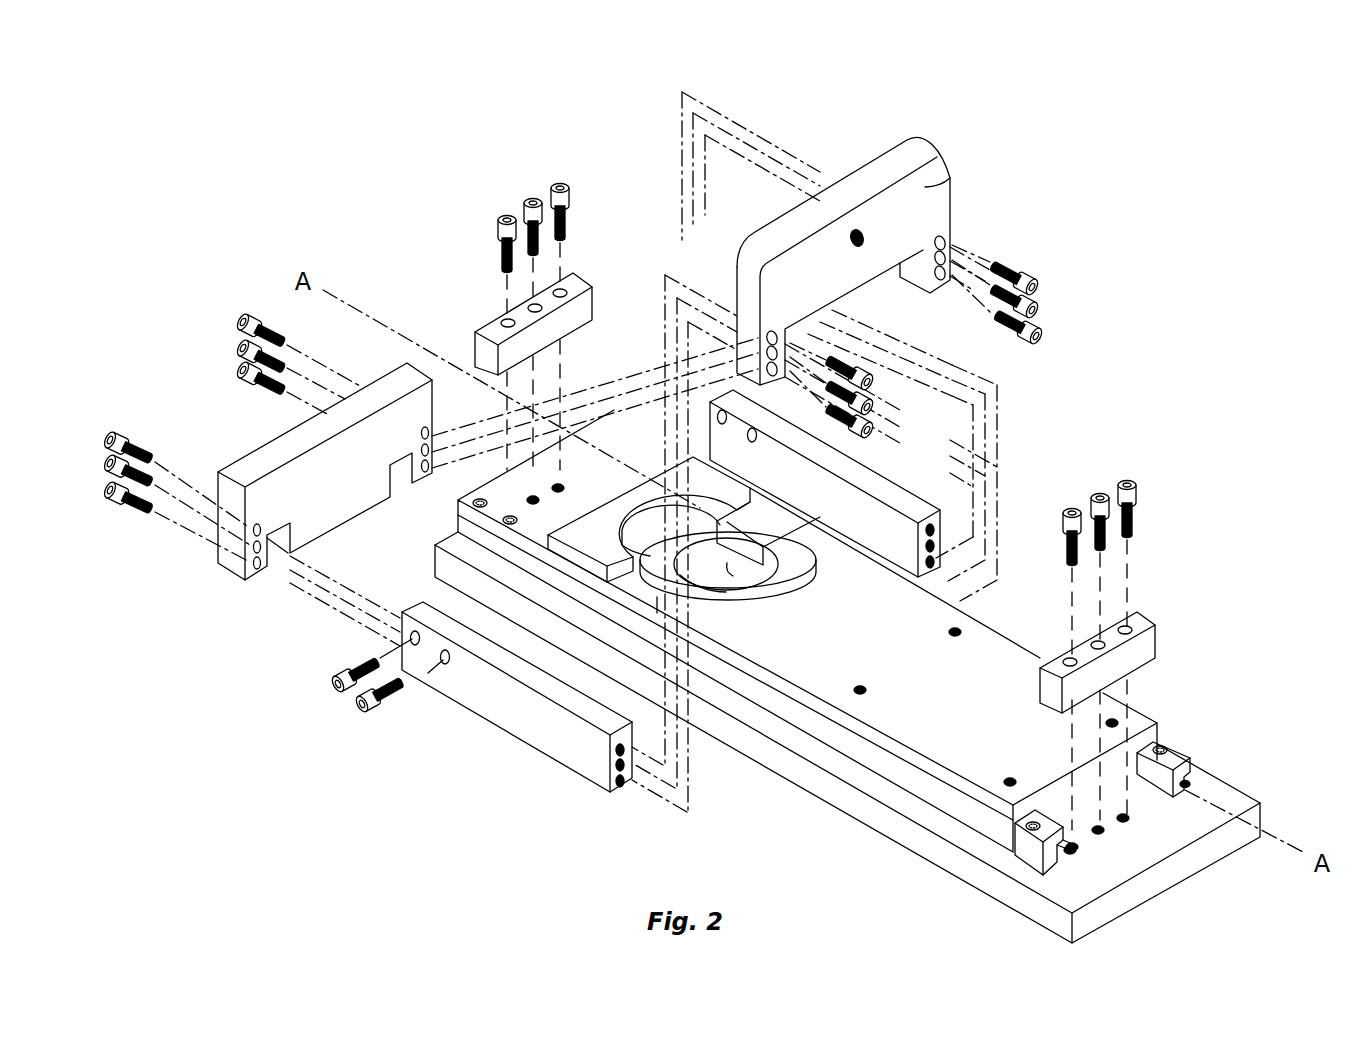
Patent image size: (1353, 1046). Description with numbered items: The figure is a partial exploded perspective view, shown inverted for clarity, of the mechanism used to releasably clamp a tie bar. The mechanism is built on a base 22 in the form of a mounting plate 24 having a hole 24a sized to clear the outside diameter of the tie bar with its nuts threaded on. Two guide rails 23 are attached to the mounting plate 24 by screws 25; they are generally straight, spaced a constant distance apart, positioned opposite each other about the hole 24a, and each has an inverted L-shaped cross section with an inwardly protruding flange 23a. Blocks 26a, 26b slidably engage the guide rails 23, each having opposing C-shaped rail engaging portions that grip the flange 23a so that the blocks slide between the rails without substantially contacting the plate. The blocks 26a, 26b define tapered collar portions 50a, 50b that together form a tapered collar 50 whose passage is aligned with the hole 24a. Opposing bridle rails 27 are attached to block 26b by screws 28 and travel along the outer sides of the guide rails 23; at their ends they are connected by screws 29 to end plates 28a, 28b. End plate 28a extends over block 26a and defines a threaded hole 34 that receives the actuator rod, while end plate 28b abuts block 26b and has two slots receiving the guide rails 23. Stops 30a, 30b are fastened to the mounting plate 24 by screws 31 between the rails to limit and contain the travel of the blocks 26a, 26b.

The base 22 is at (1170, 866).
The guide rails 23 is at (1010, 833).
The inwardly protruding flange 23a is at (1068, 832).
The mounting plate 24 is at (778, 762).
The hole 24a is at (728, 574).
The screws 25 is at (506, 521).
The block 26a is at (1005, 657).
The block 26b is at (582, 536).
The bridle rails 27 is at (538, 722).
The screws 28 is at (370, 712).
The end plate 28a is at (930, 187).
The end plate 28b is at (388, 396).
The screws 29 is at (114, 438).
The stop 30a is at (1150, 613).
The stop 30b is at (492, 326).
The screws 31 is at (578, 203).
The threaded hole 34 is at (863, 233).
The tapered collar 50 is at (652, 544).
The tapered collar portion 50a is at (795, 573).
The tapered collar portion 50b is at (595, 522).